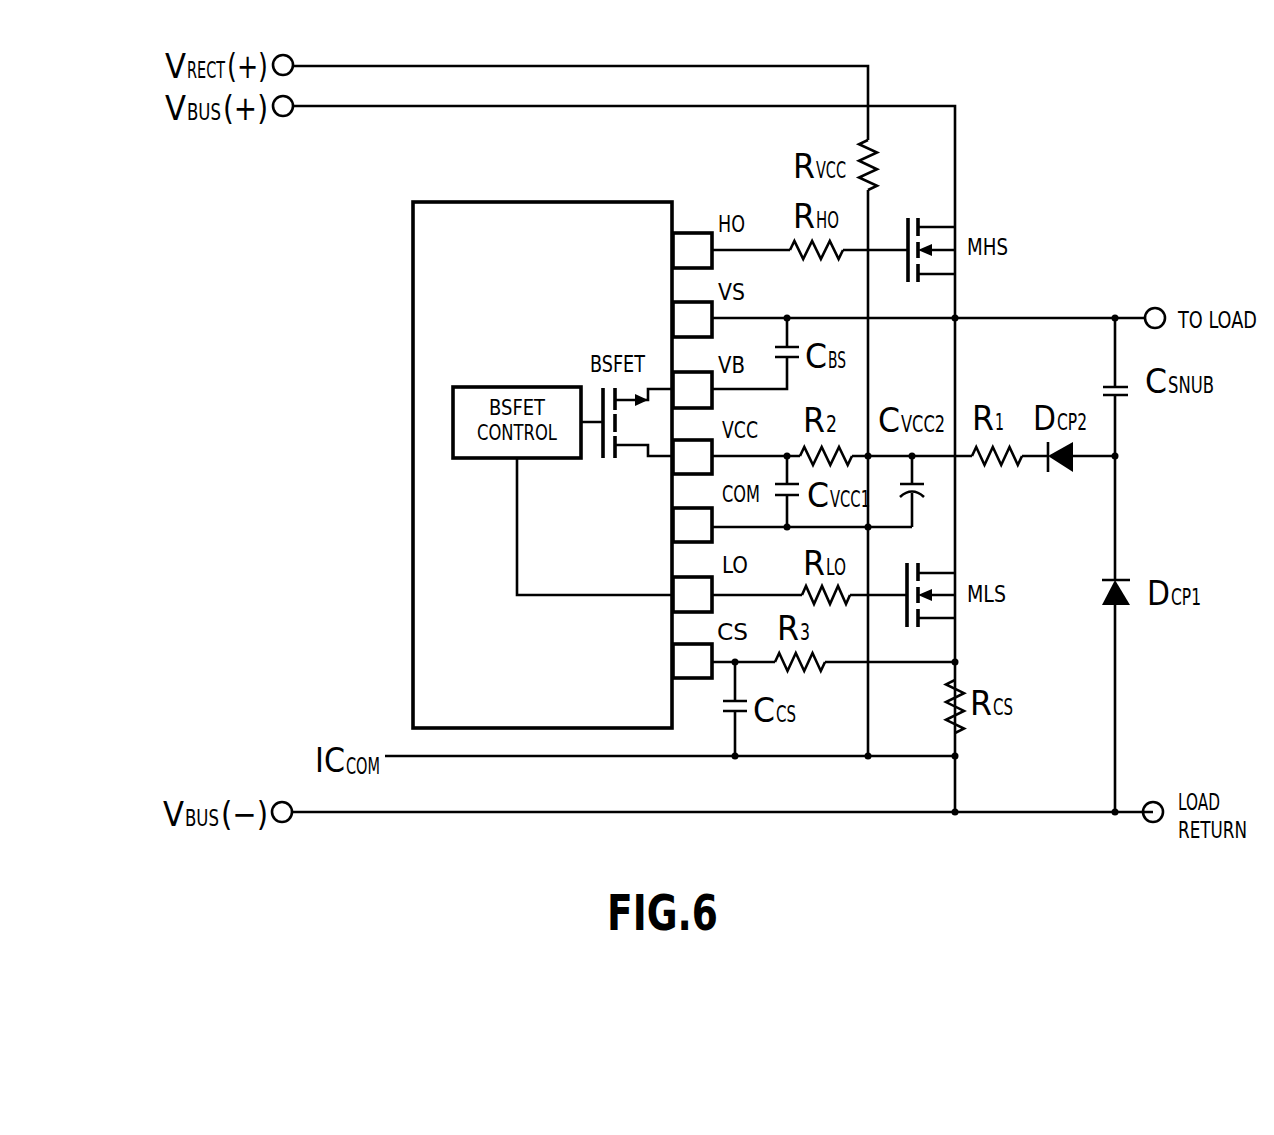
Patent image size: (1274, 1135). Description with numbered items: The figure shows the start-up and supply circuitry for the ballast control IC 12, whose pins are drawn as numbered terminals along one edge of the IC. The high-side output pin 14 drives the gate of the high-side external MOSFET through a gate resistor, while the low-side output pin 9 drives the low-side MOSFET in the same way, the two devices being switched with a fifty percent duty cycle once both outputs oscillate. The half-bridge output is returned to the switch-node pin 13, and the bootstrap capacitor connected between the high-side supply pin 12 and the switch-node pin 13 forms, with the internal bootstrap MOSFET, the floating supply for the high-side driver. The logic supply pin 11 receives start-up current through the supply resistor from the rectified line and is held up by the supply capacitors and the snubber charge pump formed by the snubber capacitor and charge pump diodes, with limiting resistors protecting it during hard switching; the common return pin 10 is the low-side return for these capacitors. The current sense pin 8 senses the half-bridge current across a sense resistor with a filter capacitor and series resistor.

The HO pin (high-side gate drive output) 14 is at (692, 250).
The VS pin (high-side floating supply return) 13 is at (692, 319).
The ballast control IC 12 is at (692, 390).
The VCC pin (low-side supply) 11 is at (692, 456).
The COM pin (low-side return) 10 is at (692, 524).
The LO pin (low-side gate drive output) 9 is at (692, 594).
The CS pin (current sense input) 8 is at (692, 660).